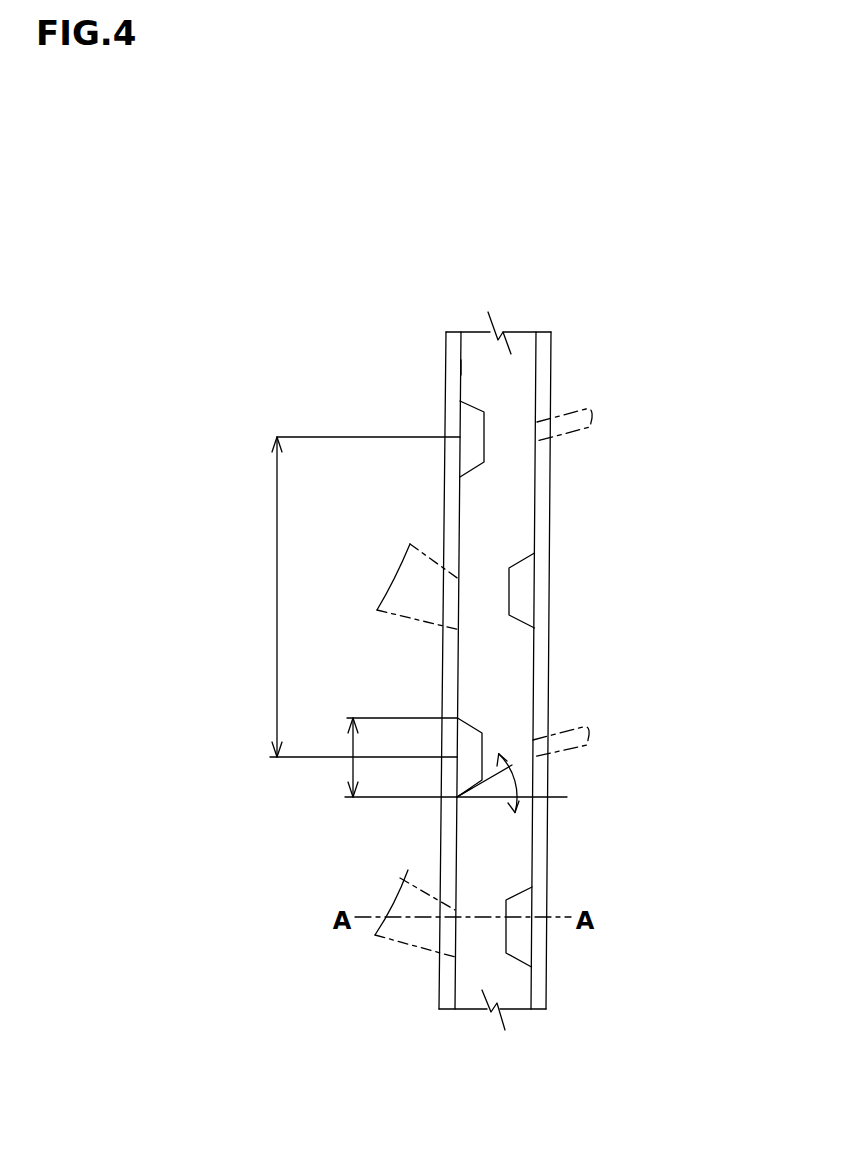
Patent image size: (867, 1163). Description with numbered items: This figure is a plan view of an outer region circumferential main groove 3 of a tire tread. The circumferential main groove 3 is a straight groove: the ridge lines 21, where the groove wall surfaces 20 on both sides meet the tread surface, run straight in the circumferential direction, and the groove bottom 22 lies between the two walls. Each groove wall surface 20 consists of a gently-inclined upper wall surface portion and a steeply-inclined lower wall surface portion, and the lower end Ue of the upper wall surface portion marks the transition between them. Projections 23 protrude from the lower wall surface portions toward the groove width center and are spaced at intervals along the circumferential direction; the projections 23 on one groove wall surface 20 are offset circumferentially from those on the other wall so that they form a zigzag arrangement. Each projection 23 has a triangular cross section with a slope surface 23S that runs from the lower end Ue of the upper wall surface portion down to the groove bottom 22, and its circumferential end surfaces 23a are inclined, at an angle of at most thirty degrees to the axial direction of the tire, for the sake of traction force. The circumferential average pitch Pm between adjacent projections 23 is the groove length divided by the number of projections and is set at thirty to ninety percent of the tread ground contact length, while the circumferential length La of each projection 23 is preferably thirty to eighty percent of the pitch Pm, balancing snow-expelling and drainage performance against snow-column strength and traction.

The circumferential main groove 3 is at (517, 317).
The groove wall surface 20 is at (448, 990).
The ridge line 21 is at (445, 412).
The groove bottom 22 is at (482, 348).
The projection 23 is at (523, 593).
The slope surface 23S is at (473, 733).
The circumferential end surface 23a is at (470, 795).
The lower end of the upper wall surface portion Ue is at (460, 367).
The circumferential average pitch Pm is at (344, 597).
The circumferential length of the projections La is at (362, 769).